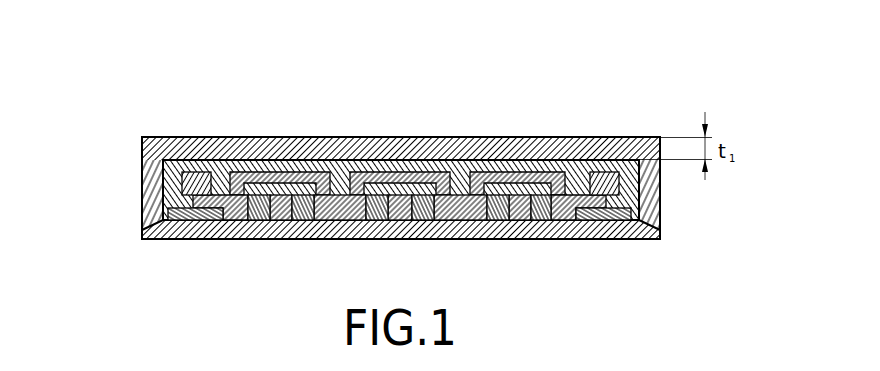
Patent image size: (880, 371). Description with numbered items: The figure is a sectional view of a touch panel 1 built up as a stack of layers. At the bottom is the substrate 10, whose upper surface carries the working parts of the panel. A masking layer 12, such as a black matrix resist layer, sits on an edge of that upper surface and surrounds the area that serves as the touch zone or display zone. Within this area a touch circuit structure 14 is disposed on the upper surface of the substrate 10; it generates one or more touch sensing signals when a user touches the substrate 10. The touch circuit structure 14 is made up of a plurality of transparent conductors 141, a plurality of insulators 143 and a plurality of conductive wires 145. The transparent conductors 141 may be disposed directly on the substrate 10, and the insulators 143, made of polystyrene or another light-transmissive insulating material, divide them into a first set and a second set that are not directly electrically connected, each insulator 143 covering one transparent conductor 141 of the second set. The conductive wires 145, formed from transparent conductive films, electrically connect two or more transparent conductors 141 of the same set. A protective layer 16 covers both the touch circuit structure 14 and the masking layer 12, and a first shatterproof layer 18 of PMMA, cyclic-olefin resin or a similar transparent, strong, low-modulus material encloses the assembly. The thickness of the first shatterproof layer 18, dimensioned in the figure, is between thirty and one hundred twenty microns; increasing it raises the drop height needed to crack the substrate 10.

The touch panel 1 is at (67, 26).
The substrate 10 is at (162, 237).
The masking layer 12 is at (170, 212).
The touch circuit structure 14 is at (130, 67).
The transparent conductors 141 is at (220, 156).
The insulators 143 is at (268, 156).
The conductive wires 145 is at (190, 156).
The protective layer 16 is at (160, 170).
The first shatterproof layer 18 is at (157, 147).